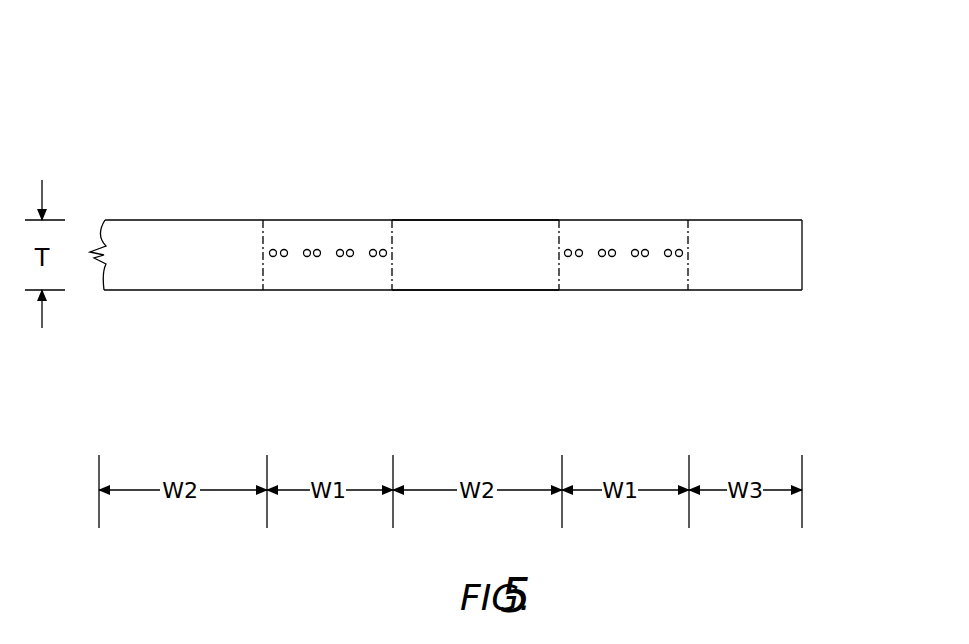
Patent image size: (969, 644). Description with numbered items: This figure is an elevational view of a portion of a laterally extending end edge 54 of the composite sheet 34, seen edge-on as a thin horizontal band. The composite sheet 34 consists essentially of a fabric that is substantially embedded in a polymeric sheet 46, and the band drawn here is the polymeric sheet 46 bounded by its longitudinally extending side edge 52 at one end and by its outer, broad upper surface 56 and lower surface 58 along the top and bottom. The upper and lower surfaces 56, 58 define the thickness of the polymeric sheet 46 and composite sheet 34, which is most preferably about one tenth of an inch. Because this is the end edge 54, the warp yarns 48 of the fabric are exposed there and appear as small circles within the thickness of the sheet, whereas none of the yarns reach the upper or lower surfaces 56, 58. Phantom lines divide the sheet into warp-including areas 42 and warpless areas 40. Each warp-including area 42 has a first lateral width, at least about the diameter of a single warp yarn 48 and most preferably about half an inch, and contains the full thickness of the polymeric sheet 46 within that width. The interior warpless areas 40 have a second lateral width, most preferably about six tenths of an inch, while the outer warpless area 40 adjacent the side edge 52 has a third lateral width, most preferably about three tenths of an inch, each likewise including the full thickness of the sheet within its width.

The composite sheet 34 is at (800, 155).
The warpless area 40 is at (205, 220).
The warp-including area 42 is at (312, 290).
The polymeric sheet 46 is at (429, 237).
The warp yarns 48 is at (273, 249).
The side edge 52 is at (802, 262).
The end edge 54 is at (515, 252).
The upper surface 56 is at (495, 220).
The lower surface 58 is at (433, 290).